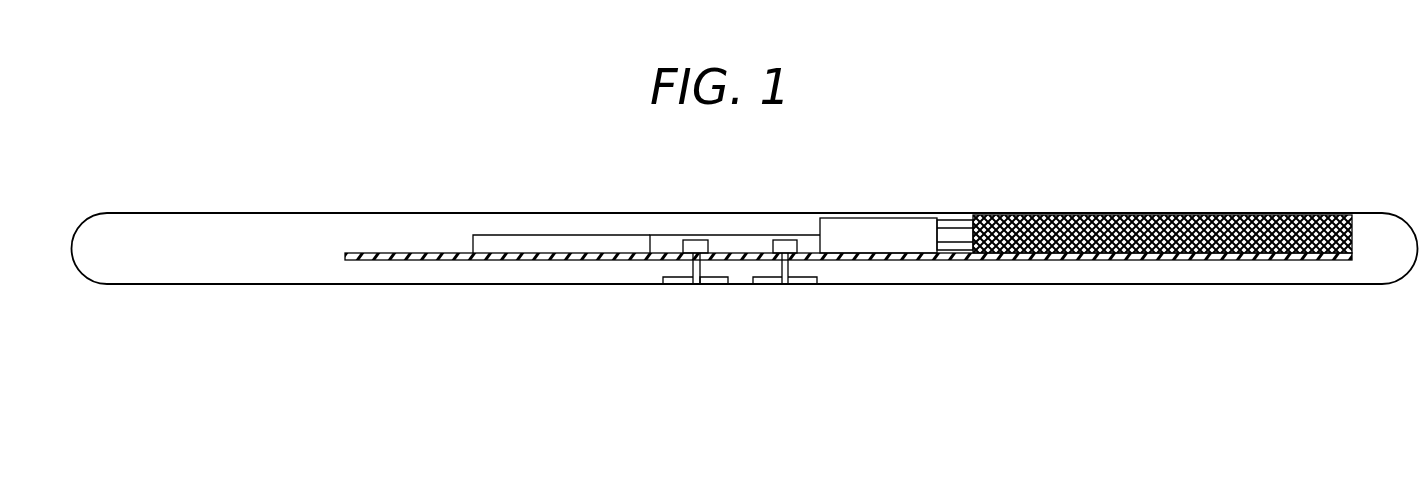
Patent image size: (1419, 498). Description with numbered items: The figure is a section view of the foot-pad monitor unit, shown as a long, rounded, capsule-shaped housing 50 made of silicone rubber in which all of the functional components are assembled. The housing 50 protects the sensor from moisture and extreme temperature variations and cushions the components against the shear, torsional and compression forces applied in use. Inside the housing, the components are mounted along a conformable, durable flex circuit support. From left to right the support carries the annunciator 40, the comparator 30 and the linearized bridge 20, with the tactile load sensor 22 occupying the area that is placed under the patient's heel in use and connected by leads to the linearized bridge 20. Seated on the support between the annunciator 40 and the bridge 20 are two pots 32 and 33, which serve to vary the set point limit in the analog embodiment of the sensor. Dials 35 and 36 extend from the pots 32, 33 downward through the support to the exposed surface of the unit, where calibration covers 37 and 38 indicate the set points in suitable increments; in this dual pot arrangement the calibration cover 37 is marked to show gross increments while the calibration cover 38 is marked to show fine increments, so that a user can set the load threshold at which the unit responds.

The linearized bridge 20 is at (897, 228).
The tactile load sensor 22 is at (1208, 215).
The comparator 30 is at (752, 240).
The pot 32 is at (693, 245).
The pot 33 is at (785, 245).
The dial 35 is at (697, 284).
The dial 36 is at (784, 284).
The calibration cover 37 is at (672, 280).
The calibration cover 38 is at (808, 284).
The annunciator 40 is at (532, 234).
The housing 50 is at (323, 285).